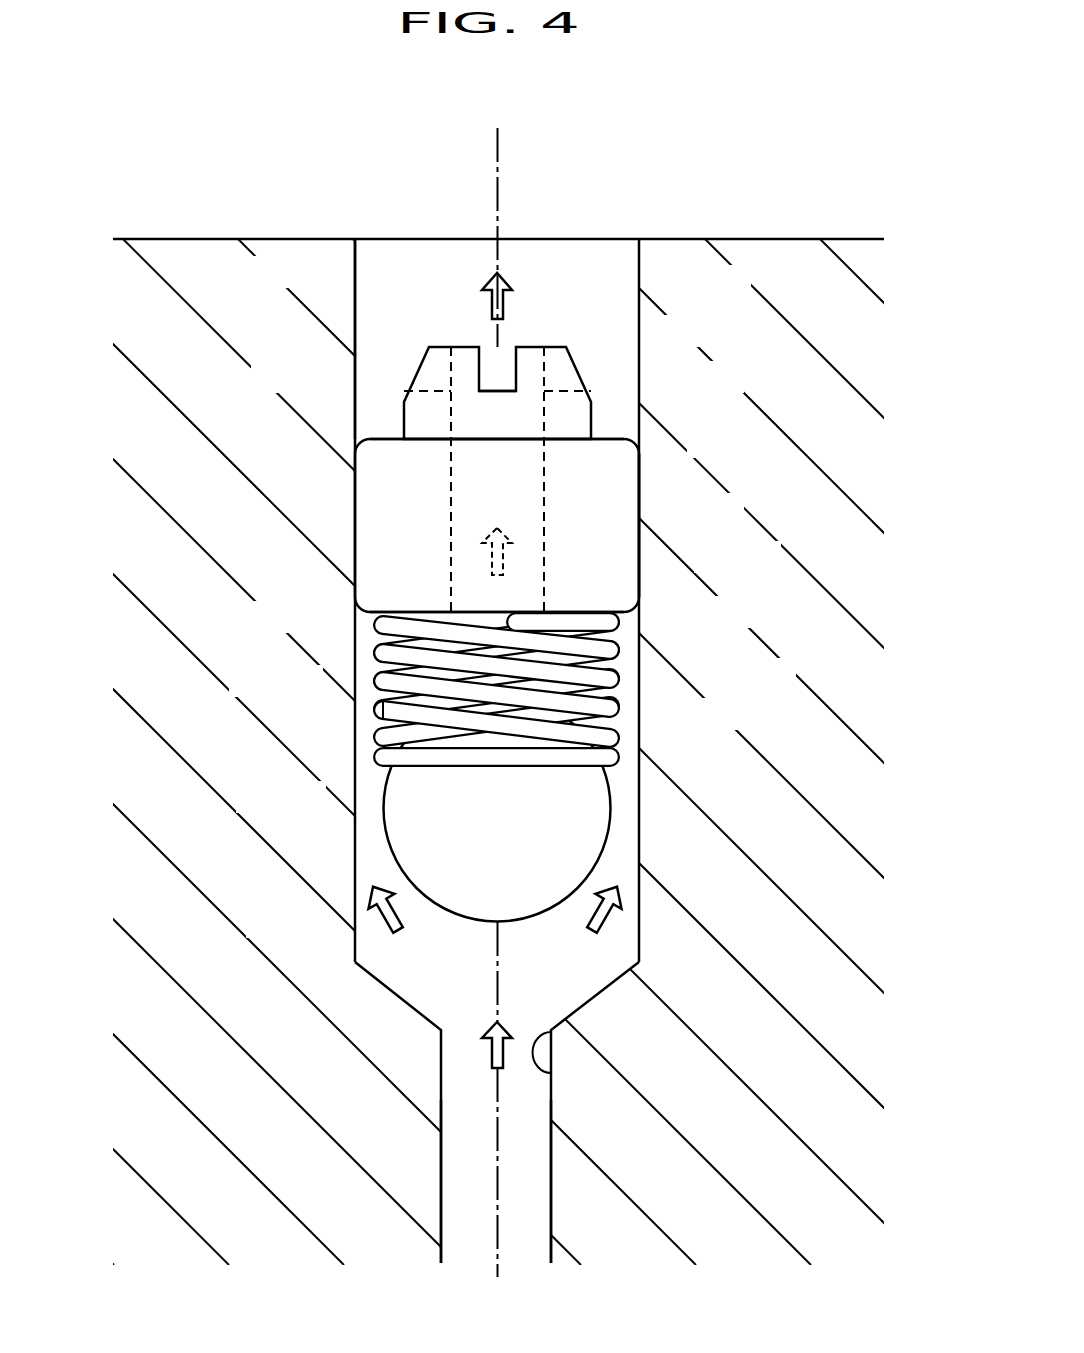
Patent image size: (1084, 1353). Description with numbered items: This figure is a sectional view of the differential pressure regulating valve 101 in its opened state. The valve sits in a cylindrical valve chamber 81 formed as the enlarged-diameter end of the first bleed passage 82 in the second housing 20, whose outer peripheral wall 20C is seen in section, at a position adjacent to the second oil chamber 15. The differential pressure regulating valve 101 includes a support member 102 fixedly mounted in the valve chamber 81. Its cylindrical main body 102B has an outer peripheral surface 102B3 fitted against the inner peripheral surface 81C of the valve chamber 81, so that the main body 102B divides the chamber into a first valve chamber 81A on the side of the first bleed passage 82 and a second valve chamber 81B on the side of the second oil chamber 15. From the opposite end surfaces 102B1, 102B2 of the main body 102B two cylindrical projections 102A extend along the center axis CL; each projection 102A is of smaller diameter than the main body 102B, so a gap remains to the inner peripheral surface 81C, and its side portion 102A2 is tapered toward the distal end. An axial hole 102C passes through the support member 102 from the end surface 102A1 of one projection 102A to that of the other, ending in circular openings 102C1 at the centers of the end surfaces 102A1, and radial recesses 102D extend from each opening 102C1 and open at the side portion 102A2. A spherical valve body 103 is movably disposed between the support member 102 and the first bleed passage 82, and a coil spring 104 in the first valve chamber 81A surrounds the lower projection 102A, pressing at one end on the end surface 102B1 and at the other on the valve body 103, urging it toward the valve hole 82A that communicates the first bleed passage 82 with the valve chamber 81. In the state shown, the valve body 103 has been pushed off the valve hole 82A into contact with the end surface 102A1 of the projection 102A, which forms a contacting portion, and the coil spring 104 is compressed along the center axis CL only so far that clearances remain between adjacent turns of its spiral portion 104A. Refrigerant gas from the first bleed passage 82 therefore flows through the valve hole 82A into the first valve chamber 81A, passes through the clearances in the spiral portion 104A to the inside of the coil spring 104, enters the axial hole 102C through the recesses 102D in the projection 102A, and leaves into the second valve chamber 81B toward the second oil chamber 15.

The second oil chamber 15 is at (257, 163).
The second housing 20 is at (542, 752).
The outer peripheral wall 20C is at (773, 247).
The valve chamber 81 is at (453, 704).
The first valve chamber 81A is at (377, 933).
The second valve chamber 81B is at (433, 308).
The inner peripheral surface 81C is at (355, 272).
The first bleed passage 82 is at (441, 1185).
The valve hole 82A is at (551, 1073).
The differential pressure regulating valve 101 is at (233, 438).
The support member 102 is at (503, 540).
The cylindrical projection 102A is at (512, 540).
The end surface of projection 102A1 is at (397, 725).
The side portion of projection 102A2 is at (404, 391).
The cylindrical main body 102B is at (507, 528).
The end surface of main body 102B1 is at (628, 610).
The end surface of main body 102B2 is at (626, 440).
The outer peripheral surface 102B3 is at (639, 558).
The axial hole 102C is at (544, 490).
The opening 102C1 is at (548, 332).
The recess 102D is at (500, 383).
The spherical valve body 103 is at (448, 915).
The coil spring 104 is at (573, 703).
The spiral portion 104A is at (608, 700).
The center axis CL is at (497, 168).